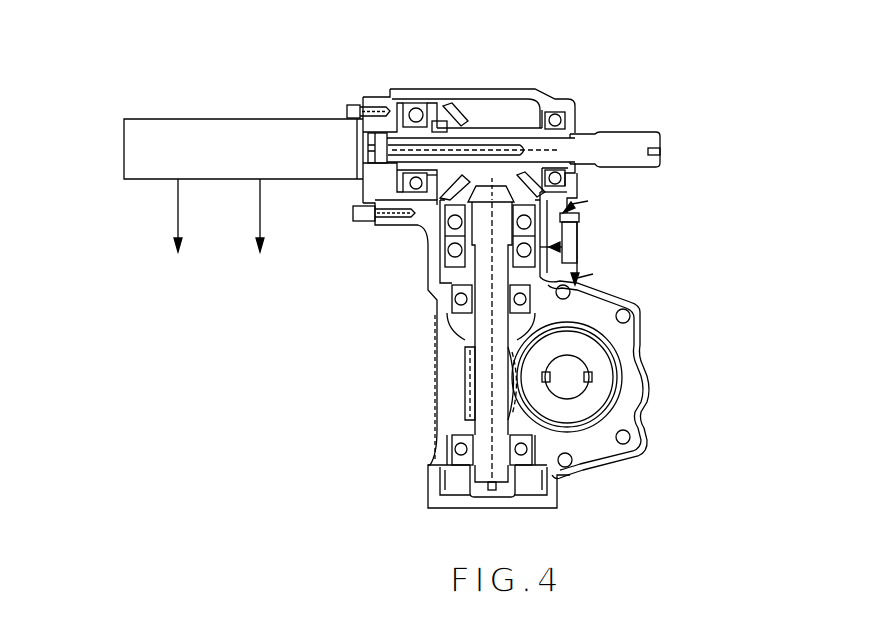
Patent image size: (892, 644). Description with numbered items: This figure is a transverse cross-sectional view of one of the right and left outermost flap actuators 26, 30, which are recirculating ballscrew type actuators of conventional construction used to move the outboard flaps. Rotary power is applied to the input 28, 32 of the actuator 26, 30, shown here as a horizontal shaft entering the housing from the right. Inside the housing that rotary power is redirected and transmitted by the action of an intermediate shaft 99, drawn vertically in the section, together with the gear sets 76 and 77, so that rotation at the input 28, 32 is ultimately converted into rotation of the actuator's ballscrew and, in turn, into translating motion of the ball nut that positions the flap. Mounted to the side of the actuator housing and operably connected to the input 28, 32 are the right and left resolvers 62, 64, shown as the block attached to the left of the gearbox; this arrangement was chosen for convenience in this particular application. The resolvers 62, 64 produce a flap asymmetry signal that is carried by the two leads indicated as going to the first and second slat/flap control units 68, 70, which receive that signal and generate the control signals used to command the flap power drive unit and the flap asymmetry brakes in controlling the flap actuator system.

The right resolver 62 is at (243, 117).
The left resolver 64 is at (178, 119).
The second slat/flap control unit 70 is at (185, 247).
The first slat/flap control unit 68 is at (265, 247).
The right outermost flap actuator 26 is at (385, 298).
The left outermost flap actuator 30 is at (293, 430).
The input 28 is at (557, 123).
The input 32 is at (633, 134).
The gear set 77 is at (458, 124).
The gear set 76 is at (514, 372).
The intermediate shaft 99 is at (488, 480).